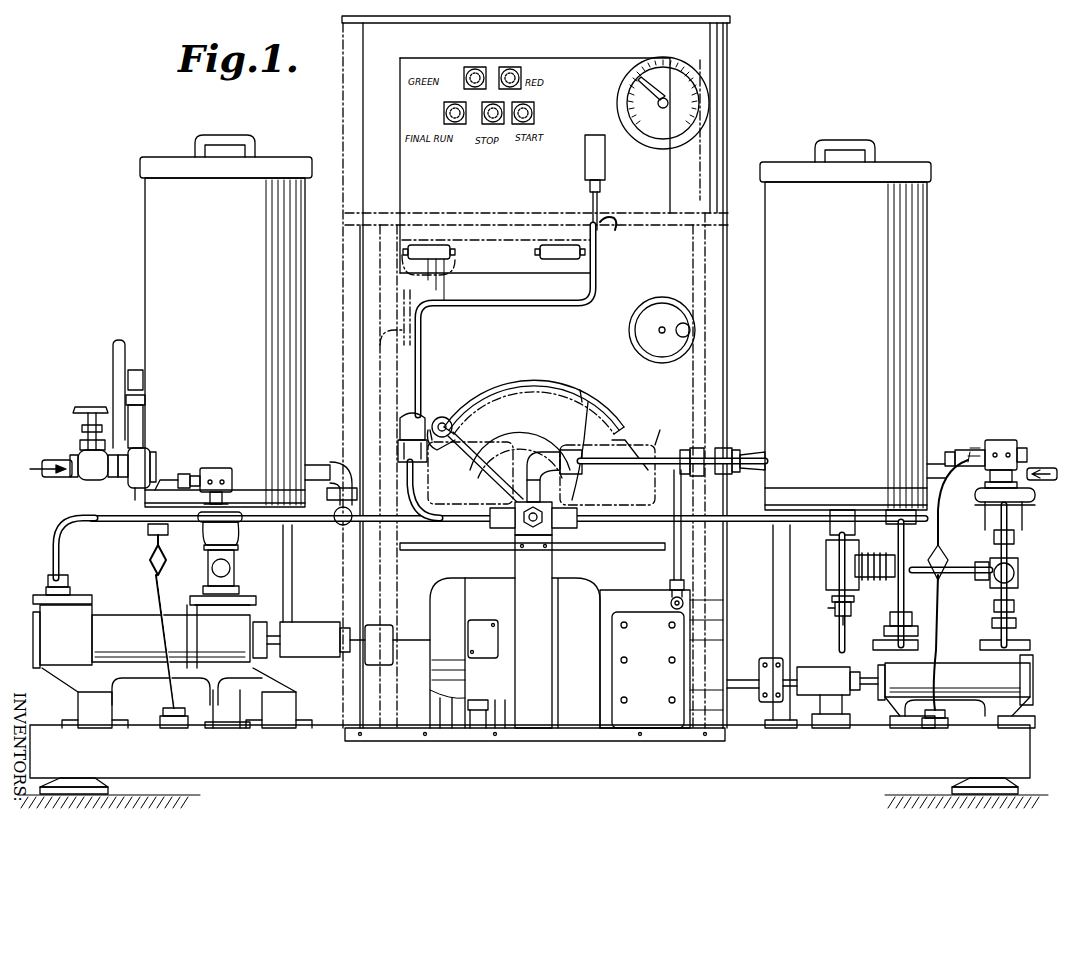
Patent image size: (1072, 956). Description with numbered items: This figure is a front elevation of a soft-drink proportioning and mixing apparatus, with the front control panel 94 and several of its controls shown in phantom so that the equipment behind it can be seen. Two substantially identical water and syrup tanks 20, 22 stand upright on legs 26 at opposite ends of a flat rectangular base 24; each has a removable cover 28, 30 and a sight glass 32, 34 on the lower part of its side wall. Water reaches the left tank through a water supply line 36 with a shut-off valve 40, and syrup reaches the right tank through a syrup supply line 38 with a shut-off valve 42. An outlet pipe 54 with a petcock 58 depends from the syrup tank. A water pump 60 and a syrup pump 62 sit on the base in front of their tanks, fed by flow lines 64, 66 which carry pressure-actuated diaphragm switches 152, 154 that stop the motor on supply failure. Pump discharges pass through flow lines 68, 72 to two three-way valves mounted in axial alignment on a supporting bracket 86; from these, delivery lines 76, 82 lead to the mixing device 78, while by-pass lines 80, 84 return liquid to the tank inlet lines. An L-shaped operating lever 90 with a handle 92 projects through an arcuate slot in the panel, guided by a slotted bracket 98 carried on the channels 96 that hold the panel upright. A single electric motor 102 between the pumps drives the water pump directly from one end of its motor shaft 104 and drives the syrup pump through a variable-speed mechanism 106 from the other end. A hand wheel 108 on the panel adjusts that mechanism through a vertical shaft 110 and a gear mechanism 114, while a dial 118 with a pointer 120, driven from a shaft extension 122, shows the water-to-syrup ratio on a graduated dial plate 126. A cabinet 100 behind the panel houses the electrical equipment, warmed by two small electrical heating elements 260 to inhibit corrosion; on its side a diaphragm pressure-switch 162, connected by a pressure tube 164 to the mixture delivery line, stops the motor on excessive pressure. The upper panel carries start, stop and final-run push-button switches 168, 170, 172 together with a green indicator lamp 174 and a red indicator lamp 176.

The water tank 20 is at (145, 246).
The syrup tank 22 is at (926, 252).
The base 24 is at (385, 760).
The legs 26 is at (148, 600).
The removable cover 28 is at (139, 163).
The removable cover 30 is at (932, 168).
The sight glass 32 is at (135, 490).
The sight glass 34 is at (750, 452).
The water supply line 36 is at (58, 466).
The syrup supply line 38 is at (1040, 488).
The shut-off valve 40 is at (90, 462).
The shut-off valve 42 is at (990, 484).
The outlet pipe 54 is at (828, 580).
The petcock 58 is at (830, 610).
The water pump 60 is at (108, 608).
The syrup pump 62 is at (948, 662).
The flow line 64 is at (240, 575).
The flow line 66 is at (1018, 584).
The flow line 68 is at (52, 546).
The flow line 72 is at (750, 528).
The delivery line 76 is at (525, 436).
The mixing device 78 is at (408, 416).
The by-pass line 80 is at (336, 462).
The delivery line 82 is at (432, 524).
The by-pass line 84 is at (588, 402).
The supporting bracket 86 is at (528, 700).
The operating lever 90 is at (522, 478).
The handle 92 is at (455, 418).
The control panel 94 is at (735, 92).
The channels 96 is at (345, 112).
The slotted bracket 98 is at (526, 380).
The cabinet 100 is at (586, 94).
The electric motor 102 is at (499, 671).
The motor shaft 104 is at (440, 698).
The variable-speed mechanism 106 is at (618, 594).
The hand wheel 108 is at (632, 338).
The vertical shaft 110 is at (672, 362).
The gear mechanism 114 is at (670, 606).
The dial 118 is at (706, 103).
The pointer 120 is at (666, 90).
The shaft extension 122 is at (708, 152).
The dial plate 126 is at (668, 128).
The diaphragm switch 152 is at (216, 468).
The diaphragm switch 154 is at (985, 450).
The diaphragm pressure-switch 162 is at (606, 164).
The pressure tube 164 is at (598, 283).
The push-button switch 168 is at (527, 102).
The push-button switch 170 is at (496, 124).
The push-button switch 172 is at (452, 102).
The green indicator lamp 174 is at (472, 66).
The red indicator lamp 176 is at (513, 66).
The electrical heating elements 260 is at (432, 246).